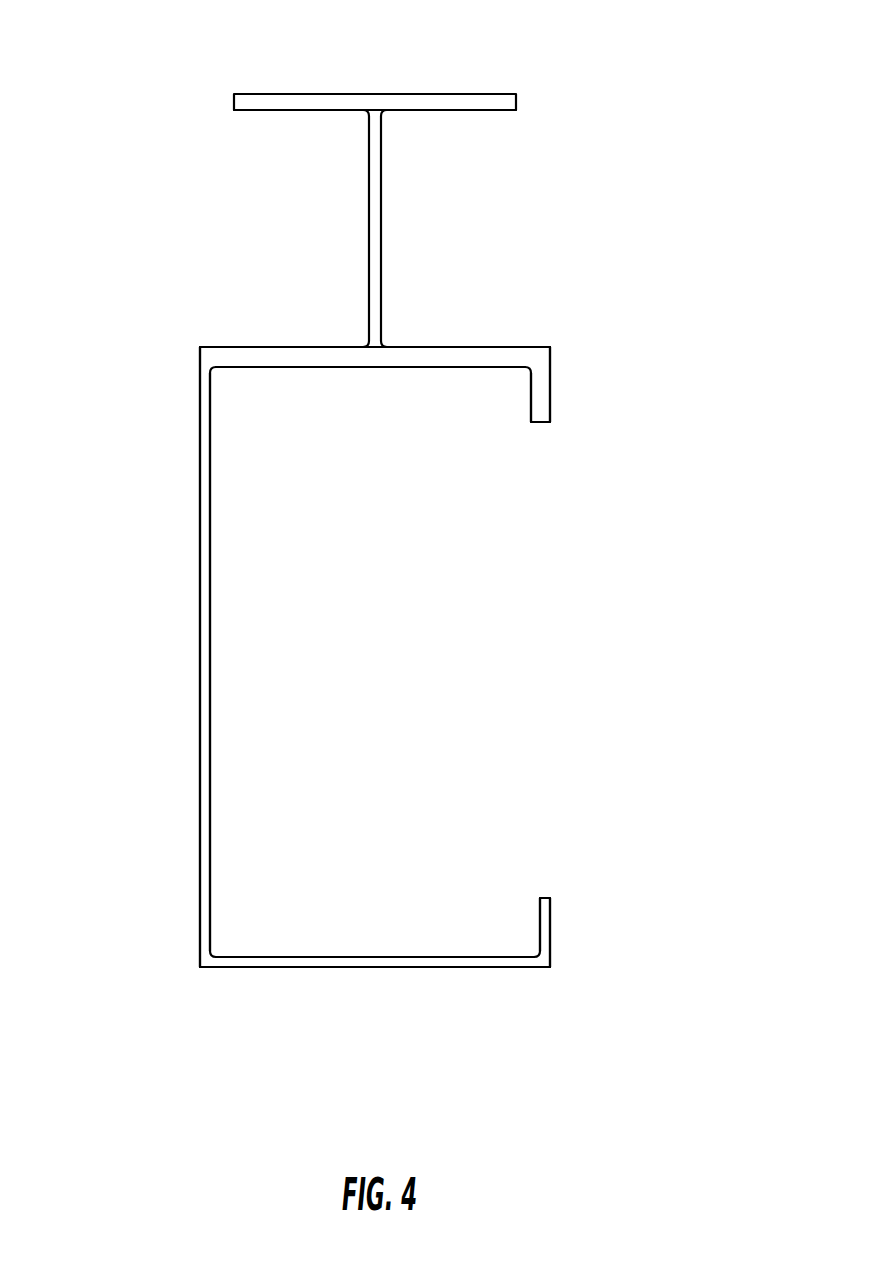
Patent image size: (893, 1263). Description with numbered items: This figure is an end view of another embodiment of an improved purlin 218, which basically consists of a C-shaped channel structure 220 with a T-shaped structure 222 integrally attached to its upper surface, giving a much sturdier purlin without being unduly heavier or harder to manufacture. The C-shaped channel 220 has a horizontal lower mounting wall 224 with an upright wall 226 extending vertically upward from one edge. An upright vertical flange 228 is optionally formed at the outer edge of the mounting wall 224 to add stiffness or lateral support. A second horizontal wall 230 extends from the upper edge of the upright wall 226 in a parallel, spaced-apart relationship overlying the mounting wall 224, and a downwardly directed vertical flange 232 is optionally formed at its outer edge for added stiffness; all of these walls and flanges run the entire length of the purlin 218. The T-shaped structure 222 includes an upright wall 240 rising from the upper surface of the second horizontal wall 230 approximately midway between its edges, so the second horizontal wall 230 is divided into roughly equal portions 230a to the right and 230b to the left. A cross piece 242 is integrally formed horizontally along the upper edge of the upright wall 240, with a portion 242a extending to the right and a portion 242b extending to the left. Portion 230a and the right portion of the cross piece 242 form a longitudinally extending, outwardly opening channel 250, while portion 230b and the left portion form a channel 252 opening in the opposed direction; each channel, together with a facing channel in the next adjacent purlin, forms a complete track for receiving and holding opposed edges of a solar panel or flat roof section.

The purlin 218 is at (759, 606).
The C-shaped channel structure 220 is at (348, 656).
The T-shaped structure 222 is at (331, 173).
The mounting wall 224 is at (421, 968).
The upright wall 226 is at (204, 723).
The upright vertical flange 228 is at (553, 942).
The second horizontal wall 230 is at (408, 367).
The portion of second horizontal wall 230a is at (461, 348).
The portion of second horizontal wall 230b is at (264, 348).
The downwardly directed vertical flange 232 is at (537, 405).
The upright wall 240 is at (375, 199).
The cross piece 242 is at (393, 53).
The portion of cross piece 242a is at (442, 112).
The portion of cross piece 242b is at (338, 112).
The outwardly opening channel 250 is at (534, 218).
The channel 252 is at (292, 248).